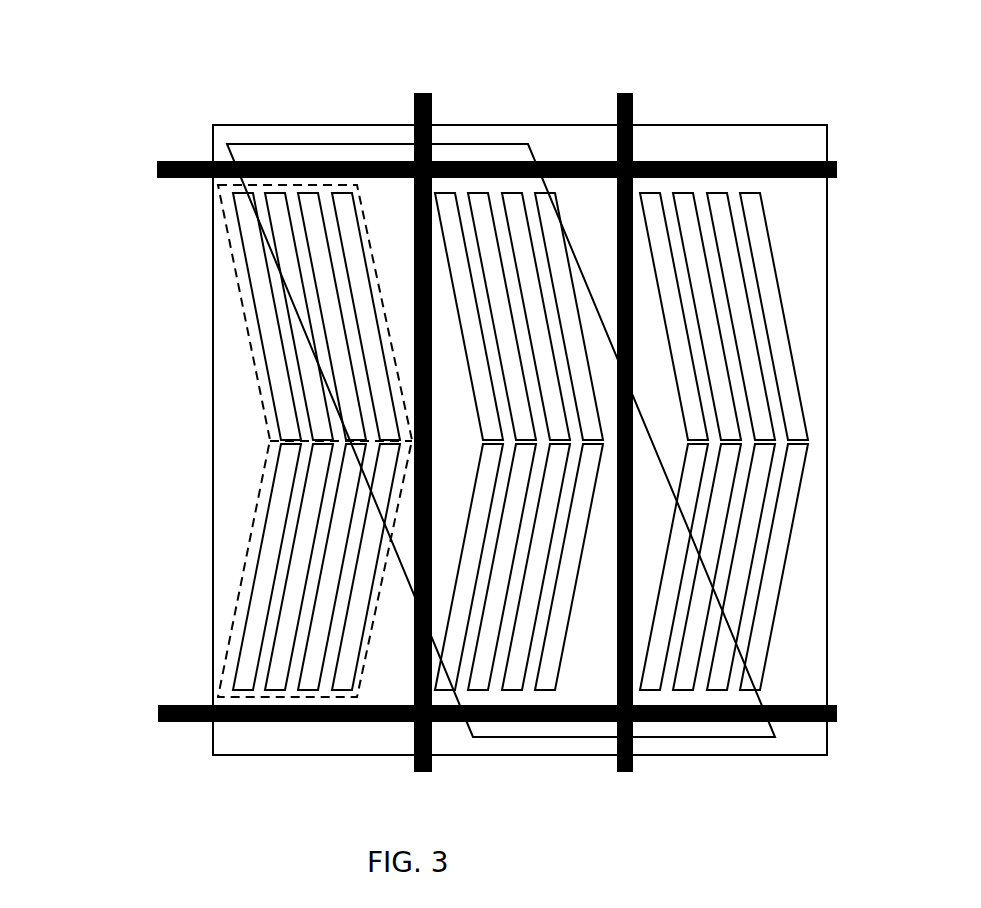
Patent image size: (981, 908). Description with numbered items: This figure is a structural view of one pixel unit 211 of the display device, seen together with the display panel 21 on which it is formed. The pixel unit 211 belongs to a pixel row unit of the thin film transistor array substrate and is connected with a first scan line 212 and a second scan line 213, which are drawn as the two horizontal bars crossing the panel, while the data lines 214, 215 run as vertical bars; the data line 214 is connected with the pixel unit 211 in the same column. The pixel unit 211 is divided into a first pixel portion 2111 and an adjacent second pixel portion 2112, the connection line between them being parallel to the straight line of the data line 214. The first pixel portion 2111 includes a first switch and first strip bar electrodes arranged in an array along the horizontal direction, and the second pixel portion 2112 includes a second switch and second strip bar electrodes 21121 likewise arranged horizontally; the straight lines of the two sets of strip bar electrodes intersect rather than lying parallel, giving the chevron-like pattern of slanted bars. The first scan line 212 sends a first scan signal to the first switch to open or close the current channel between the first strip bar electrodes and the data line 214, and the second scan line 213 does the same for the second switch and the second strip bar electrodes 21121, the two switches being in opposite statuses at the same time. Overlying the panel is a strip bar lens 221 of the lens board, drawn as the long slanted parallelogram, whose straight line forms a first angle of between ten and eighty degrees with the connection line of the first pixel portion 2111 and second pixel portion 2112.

The display panel 21 is at (648, 124).
The pixel unit 211 is at (234, 441).
The first pixel portion 2111 is at (240, 293).
The second pixel portion 2112 is at (251, 566).
The second strip bar electrode 21121 is at (237, 662).
The first scan line 212 is at (195, 160).
The second scan line 213 is at (183, 723).
The data line 214 is at (417, 93).
The data line 215 is at (622, 93).
The strip bar lens 221 is at (302, 143).